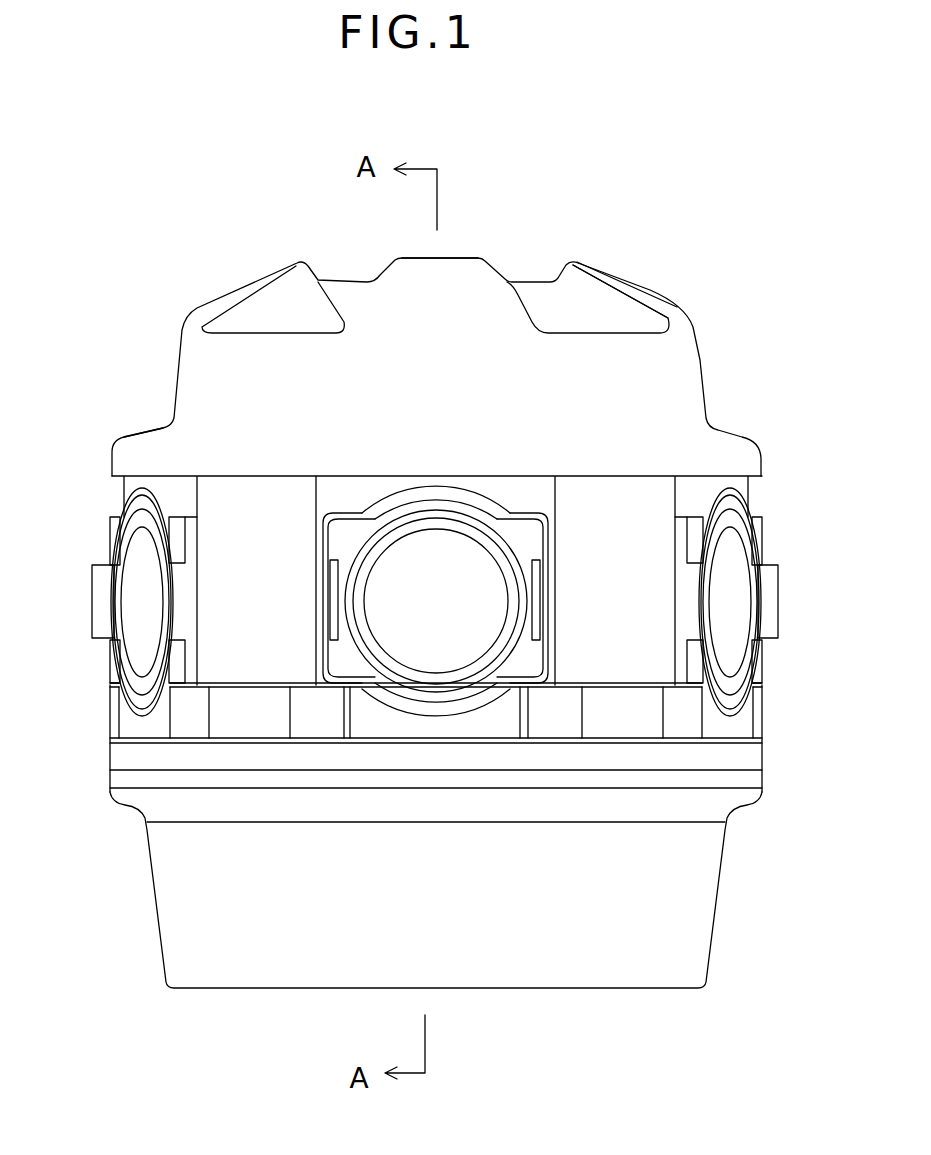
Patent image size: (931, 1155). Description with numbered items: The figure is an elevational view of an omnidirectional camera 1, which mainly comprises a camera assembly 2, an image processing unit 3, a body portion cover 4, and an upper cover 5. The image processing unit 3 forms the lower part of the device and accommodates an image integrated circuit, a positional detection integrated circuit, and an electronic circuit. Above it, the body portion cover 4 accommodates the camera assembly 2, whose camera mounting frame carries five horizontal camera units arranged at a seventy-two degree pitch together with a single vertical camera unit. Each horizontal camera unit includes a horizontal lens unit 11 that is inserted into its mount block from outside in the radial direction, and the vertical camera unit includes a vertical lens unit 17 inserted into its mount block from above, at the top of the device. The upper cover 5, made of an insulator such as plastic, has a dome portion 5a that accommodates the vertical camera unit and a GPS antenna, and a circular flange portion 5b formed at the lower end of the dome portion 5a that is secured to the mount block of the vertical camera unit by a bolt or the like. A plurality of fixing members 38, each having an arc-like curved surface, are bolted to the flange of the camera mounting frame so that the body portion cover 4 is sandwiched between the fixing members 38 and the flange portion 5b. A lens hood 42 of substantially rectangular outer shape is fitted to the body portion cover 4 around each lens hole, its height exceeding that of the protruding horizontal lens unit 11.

The omnidirectional camera 1 is at (437, 306).
The camera assembly 2 is at (80, 495).
The image processing unit 3 is at (147, 924).
The body portion cover 4 is at (758, 496).
The upper cover 5 is at (705, 355).
The dome portion 5a is at (627, 278).
The flange portion 5b is at (128, 432).
The horizontal lens unit 11 is at (104, 659).
The vertical lens unit 17 is at (492, 255).
The fixing member 38 is at (617, 722).
The lens hood 42 is at (782, 590).